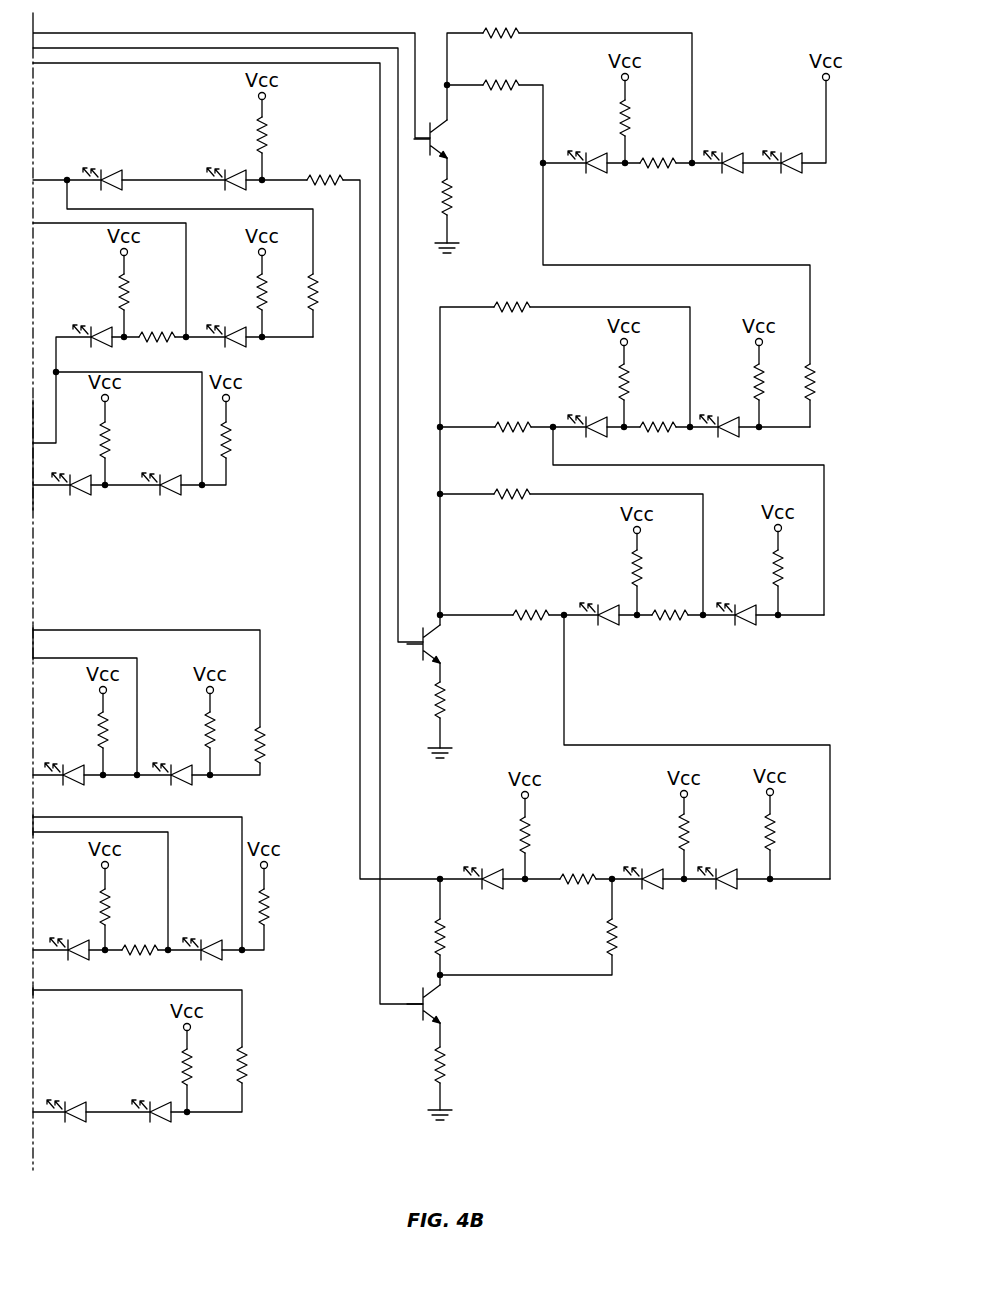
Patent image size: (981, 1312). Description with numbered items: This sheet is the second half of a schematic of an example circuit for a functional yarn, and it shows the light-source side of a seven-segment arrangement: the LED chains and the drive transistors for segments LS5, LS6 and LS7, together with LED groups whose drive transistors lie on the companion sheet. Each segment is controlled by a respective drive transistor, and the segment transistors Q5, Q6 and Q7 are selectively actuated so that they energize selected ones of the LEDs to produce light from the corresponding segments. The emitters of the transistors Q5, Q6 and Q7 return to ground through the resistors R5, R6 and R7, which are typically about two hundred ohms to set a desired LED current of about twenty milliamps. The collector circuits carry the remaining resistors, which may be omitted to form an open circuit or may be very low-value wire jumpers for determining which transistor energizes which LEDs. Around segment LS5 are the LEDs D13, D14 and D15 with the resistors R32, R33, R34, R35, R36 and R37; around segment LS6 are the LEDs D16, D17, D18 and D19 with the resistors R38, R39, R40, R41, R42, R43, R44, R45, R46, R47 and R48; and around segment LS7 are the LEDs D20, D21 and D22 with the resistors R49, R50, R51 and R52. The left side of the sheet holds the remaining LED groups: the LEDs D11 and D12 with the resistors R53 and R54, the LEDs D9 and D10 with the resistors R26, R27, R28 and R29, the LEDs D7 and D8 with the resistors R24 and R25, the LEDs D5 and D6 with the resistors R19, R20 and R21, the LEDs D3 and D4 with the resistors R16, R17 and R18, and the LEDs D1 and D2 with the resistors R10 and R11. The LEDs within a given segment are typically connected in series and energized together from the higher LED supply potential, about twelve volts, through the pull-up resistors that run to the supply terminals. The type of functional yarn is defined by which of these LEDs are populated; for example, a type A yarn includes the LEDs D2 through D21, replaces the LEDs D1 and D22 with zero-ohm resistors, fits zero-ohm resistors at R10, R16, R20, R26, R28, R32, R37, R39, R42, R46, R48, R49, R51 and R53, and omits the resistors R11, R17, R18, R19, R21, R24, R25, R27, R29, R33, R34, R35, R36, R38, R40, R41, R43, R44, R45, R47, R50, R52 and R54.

The LED D1 is at (72, 1112).
The LED D2 is at (153, 1112).
The LED D3 is at (74, 950).
The LED D4 is at (207, 950).
The LED D5 is at (69, 775).
The LED D6 is at (176, 775).
The LED D7 is at (75, 481).
The LED D8 is at (165, 481).
The LED D9 is at (95, 334).
The LED D10 is at (231, 334).
The LED D11 is at (126, 174).
The LED D12 is at (247, 174).
The LED D13 is at (491, 878).
The LED D14 is at (649, 878).
The LED D15 is at (722, 878).
The LED D16 is at (603, 615).
The LED D17 is at (740, 615).
The LED D18 is at (592, 427).
The LED D19 is at (724, 427).
The LED D20 is at (592, 163).
The LED D21 is at (727, 163).
The LED D22 is at (787, 163).
The resistor R5 is at (456, 1065).
The resistor R6 is at (456, 700).
The resistor R7 is at (463, 197).
The resistor R10 is at (208, 1067).
The resistor R11 is at (264, 1065).
The resistor R16 is at (139, 937).
The resistor R17 is at (127, 907).
The resistor R18 is at (286, 907).
The resistor R19 is at (85, 729).
The resistor R20 is at (231, 730).
The resistor R21 is at (281, 745).
The resistor R24 is at (127, 440).
The resistor R25 is at (248, 440).
The resistor R26 is at (156, 324).
The resistor R27 is at (147, 292).
The resistor R28 is at (284, 292).
The resistor R29 is at (334, 292).
The resistor R32 is at (463, 937).
The resistor R33 is at (635, 937).
The resistor R34 is at (547, 835).
The resistor R35 is at (706, 832).
The resistor R36 is at (792, 832).
The resistor R37 is at (577, 866).
The resistor R38 is at (530, 602).
The resistor R39 is at (511, 482).
The resistor R40 is at (512, 414).
The resistor R41 is at (511, 294).
The resistor R42 is at (658, 568).
The resistor R43 is at (669, 602).
The resistor R44 is at (799, 568).
The resistor R45 is at (646, 382).
The resistor R46 is at (657, 414).
The resistor R47 is at (779, 382).
The resistor R48 is at (830, 382).
The resistor R49 is at (646, 118).
The resistor R50 is at (659, 151).
The resistor R51 is at (500, 21).
The resistor R52 is at (500, 72).
The resistor R53 is at (283, 135).
The resistor R54 is at (326, 167).
The segment transistor Q5 is at (442, 1004).
The segment transistor Q6 is at (441, 644).
The segment transistor Q7 is at (449, 139).
The segment LS5 is at (528, 1043).
The segment LS6 is at (526, 683).
The segment LS7 is at (527, 177).